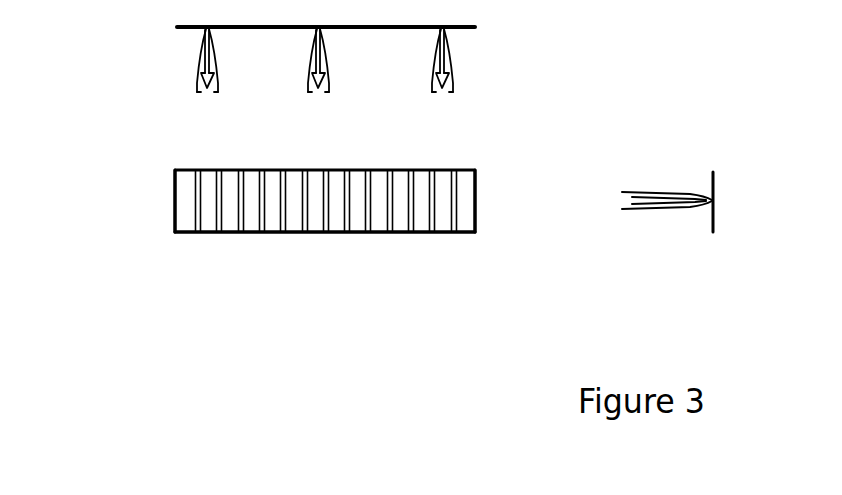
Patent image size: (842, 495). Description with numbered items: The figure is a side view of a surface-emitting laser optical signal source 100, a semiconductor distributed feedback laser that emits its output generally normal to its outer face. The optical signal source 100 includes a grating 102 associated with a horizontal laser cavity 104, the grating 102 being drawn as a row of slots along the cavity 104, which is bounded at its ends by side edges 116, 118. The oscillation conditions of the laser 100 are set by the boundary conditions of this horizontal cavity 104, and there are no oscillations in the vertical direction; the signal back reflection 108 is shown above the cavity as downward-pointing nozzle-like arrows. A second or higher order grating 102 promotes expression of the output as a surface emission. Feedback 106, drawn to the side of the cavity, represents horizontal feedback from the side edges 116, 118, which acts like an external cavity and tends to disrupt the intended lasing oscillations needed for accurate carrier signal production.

The optical signal source 100 is at (118, 185).
The grating 102 is at (268, 233).
The laser cavity 104 is at (405, 235).
The feedback 106 is at (645, 190).
The signal back reflection 108 is at (196, 64).
The side edge 116 is at (479, 208).
The side edge 118 is at (171, 218).